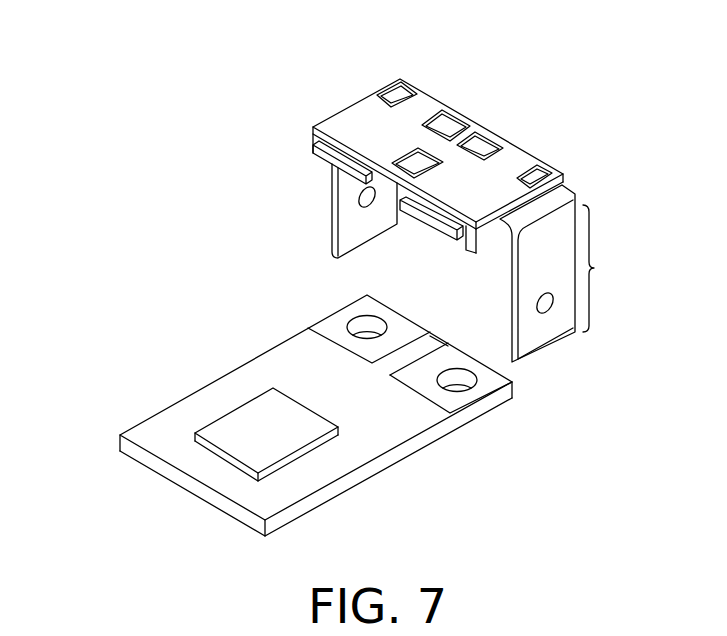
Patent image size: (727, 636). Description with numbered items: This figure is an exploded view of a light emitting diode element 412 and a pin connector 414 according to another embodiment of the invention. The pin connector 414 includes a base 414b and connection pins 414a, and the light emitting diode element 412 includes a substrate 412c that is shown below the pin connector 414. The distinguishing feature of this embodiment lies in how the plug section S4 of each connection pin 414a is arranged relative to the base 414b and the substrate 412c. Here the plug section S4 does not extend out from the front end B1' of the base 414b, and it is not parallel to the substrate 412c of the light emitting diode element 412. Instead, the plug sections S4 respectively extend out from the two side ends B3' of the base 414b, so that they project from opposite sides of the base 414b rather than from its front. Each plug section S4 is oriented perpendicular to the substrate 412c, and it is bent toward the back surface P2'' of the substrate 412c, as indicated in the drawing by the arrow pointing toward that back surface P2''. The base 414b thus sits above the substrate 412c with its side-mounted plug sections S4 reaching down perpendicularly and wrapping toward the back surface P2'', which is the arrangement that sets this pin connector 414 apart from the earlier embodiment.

The pin connector 414 is at (445, 193).
The connection pin 414a is at (525, 292).
The base 414b is at (438, 154).
The side end of the base B3' is at (508, 193).
The front end of the base B1' is at (488, 125).
The plug section S4 is at (607, 268).
The light emitting diode element 412 is at (336, 415).
The substrate 412c is at (225, 385).
The back surface of the substrate P2'' is at (111, 538).